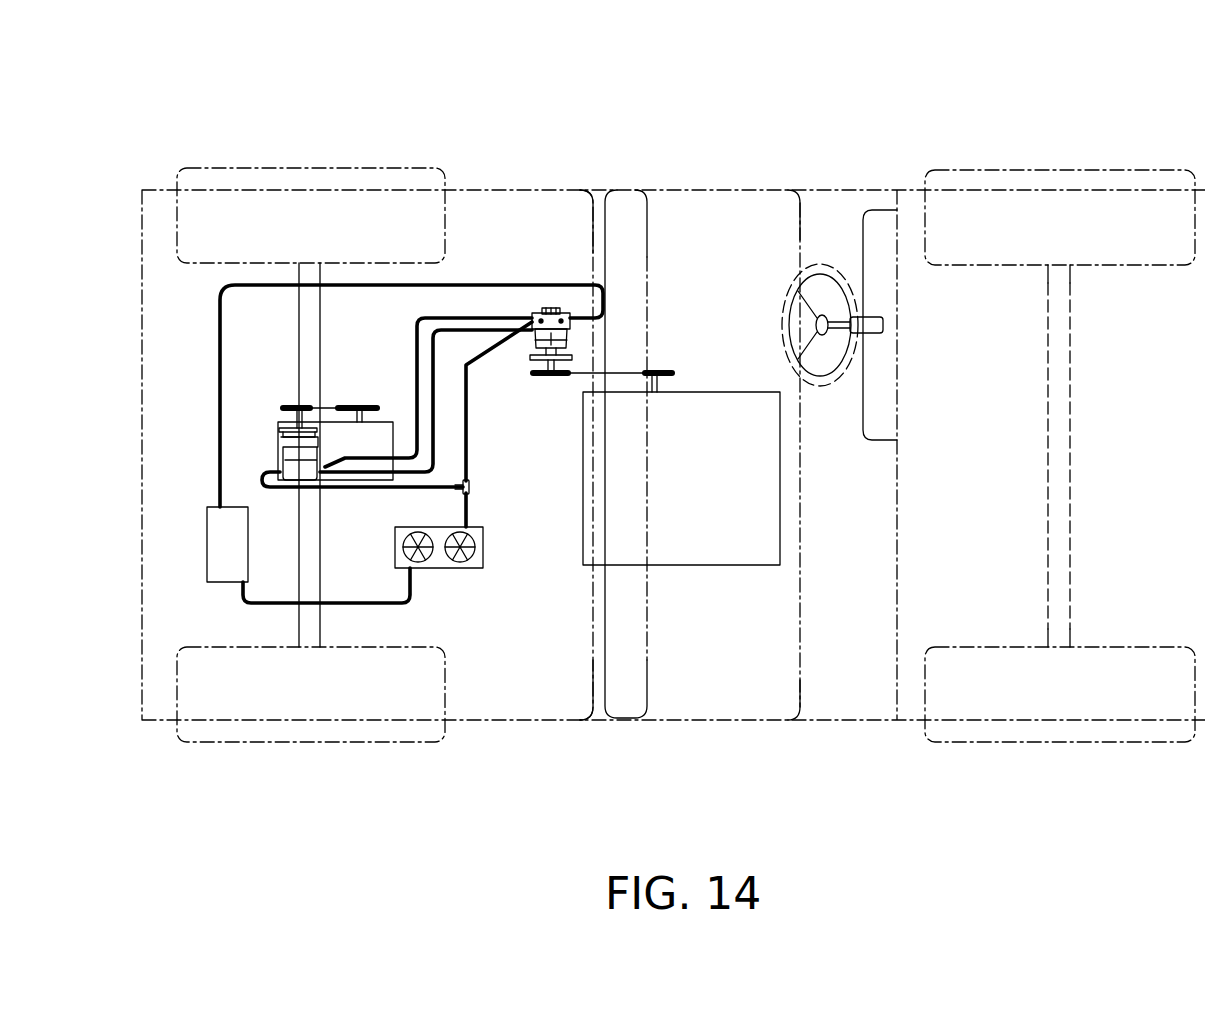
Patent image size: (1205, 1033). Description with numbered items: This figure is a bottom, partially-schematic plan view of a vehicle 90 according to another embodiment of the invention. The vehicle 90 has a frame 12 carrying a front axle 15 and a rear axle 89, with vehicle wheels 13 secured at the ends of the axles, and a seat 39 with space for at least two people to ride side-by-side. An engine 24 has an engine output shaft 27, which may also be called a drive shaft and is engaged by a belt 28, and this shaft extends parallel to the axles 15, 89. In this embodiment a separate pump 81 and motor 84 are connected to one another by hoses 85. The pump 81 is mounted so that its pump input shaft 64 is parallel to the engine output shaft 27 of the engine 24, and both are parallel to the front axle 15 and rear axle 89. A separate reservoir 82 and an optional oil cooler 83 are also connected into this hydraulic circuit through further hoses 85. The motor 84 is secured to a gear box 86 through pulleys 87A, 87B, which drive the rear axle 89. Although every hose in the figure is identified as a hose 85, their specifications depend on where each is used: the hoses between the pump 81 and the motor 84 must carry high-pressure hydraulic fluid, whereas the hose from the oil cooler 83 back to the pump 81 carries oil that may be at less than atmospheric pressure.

The frame 12 is at (510, 190).
The vehicle wheels 13 is at (310, 168).
The front axle 15 is at (1072, 455).
The engine 24 is at (705, 489).
The engine output shaft 27 is at (660, 387).
The belt 28 is at (627, 371).
The seat 39 is at (647, 662).
The pump input shaft 64 is at (538, 363).
The pump 81 is at (572, 332).
The reservoir 82 is at (218, 557).
The oil cooler 83 is at (477, 568).
The motor 84 is at (283, 453).
The hoses 85 is at (488, 285).
The gear box 86 is at (373, 452).
The pulley 87A is at (270, 375).
The pulley 87B is at (370, 404).
The rear axle 89 is at (320, 339).
The vehicle 90 is at (833, 133).